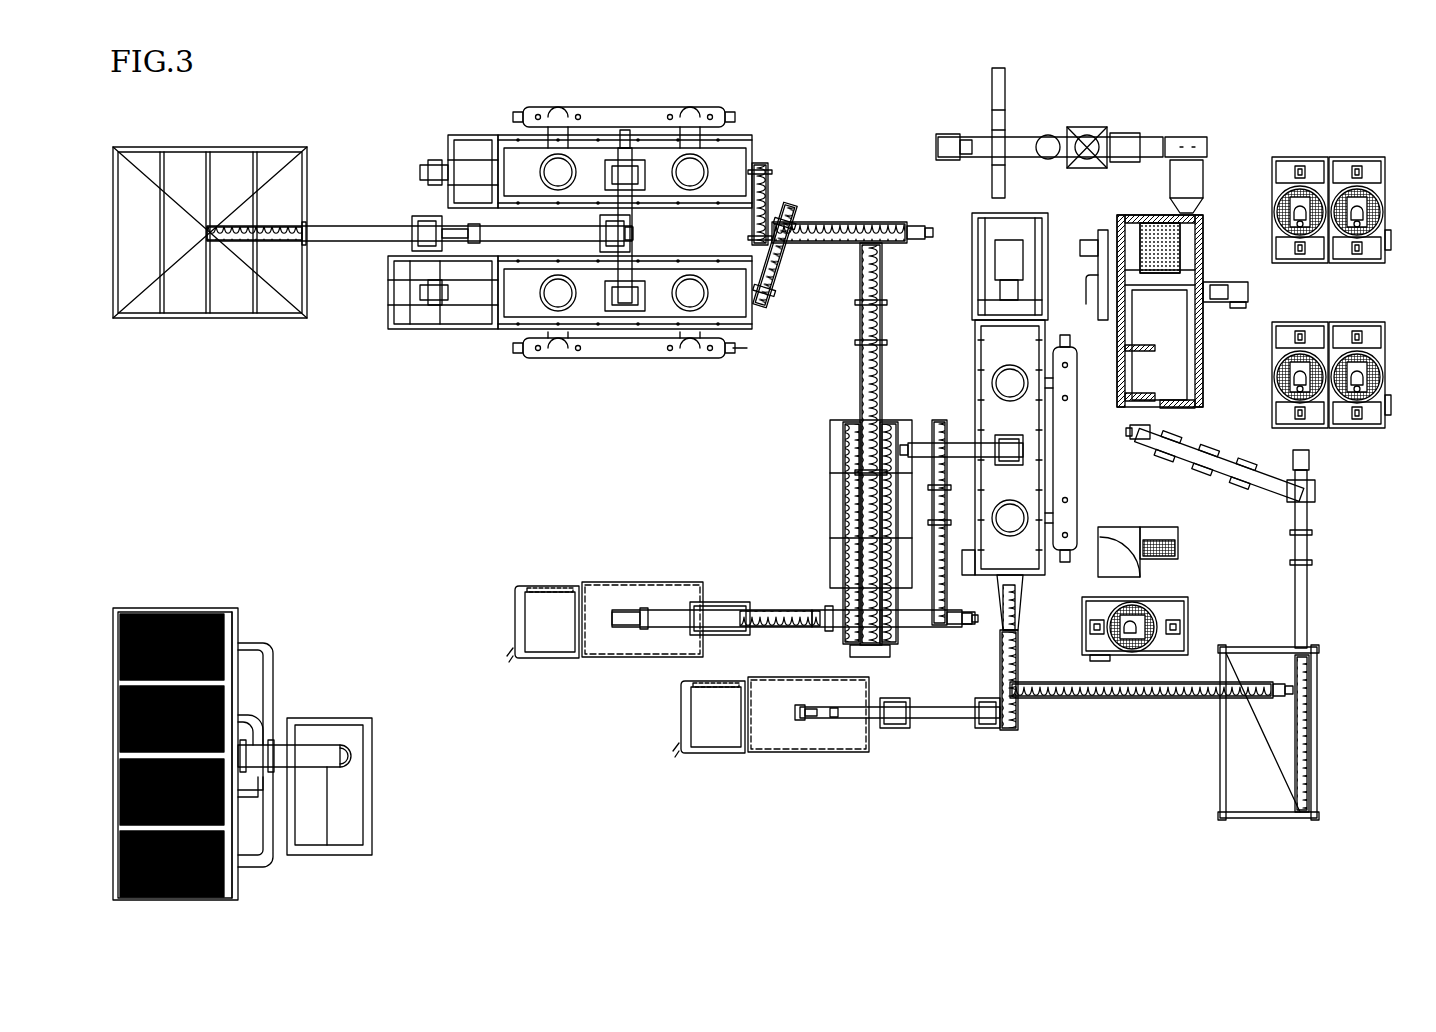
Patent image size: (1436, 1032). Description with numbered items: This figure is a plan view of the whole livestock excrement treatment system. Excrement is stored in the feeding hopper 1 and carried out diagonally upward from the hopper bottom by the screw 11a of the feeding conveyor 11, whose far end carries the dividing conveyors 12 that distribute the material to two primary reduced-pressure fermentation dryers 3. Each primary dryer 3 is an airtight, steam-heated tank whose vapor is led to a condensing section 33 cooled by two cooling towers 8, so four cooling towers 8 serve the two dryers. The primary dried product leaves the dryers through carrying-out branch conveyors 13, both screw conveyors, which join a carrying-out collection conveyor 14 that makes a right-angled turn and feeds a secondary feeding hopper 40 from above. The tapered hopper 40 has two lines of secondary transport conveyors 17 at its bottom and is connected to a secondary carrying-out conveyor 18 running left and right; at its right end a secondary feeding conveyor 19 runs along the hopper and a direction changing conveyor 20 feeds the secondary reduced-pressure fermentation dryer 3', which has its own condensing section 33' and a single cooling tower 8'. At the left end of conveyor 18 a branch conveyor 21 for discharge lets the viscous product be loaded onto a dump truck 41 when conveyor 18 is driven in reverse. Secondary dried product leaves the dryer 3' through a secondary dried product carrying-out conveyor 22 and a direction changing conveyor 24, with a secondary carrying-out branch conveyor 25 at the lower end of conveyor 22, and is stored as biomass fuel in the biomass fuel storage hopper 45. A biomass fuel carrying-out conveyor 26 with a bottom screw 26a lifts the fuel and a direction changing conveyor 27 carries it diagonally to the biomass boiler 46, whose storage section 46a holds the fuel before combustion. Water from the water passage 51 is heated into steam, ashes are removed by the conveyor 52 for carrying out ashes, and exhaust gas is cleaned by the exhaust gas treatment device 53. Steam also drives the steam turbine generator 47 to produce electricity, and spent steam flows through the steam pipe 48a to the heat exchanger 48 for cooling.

The feeding hopper 1 is at (232, 143).
The feeding conveyor 11 is at (344, 243).
The screw 11a is at (272, 226).
The primary reduced-pressure fermentation dryer 3 is at (599, 264).
The condensing section 33 is at (630, 240).
The dividing conveyor 12 is at (628, 180).
The carrying-out branch conveyor 13 is at (775, 205).
The carrying-out collection conveyor 14 is at (858, 325).
The exhaust gas treatment device 53 is at (1120, 127).
The biomass boiler 46 is at (1207, 352).
The storage section 46a is at (1140, 455).
The conveyor for carrying out ashes 52 is at (1230, 282).
The water passage 51 is at (1098, 312).
The cooling tower 8 is at (1331, 264).
The cooling tower 8' is at (1162, 627).
The secondary reduced-pressure fermentation dryer 3' is at (984, 394).
The condensing section 33' is at (1083, 448).
The secondary feeding hopper 40 is at (828, 425).
The secondary transport conveyor 17 is at (880, 510).
The secondary feeding conveyor 19 is at (940, 430).
The direction changing conveyor 20 is at (965, 445).
The direction changing conveyor for biomass fuel 27 is at (1237, 470).
The biomass fuel carrying-out conveyor 26 is at (1307, 580).
The screw 26a is at (1310, 710).
The biomass fuel storage hopper 45 is at (1222, 785).
The secondary dried product carrying-out conveyor 22 is at (1022, 617).
The direction changing conveyor 24 is at (1095, 700).
The dump truck 41 is at (605, 582).
The branch conveyor for discharge 21 is at (770, 612).
The secondary carrying-out conveyor 18 is at (920, 628).
The secondary carrying-out branch conveyor 25 is at (940, 715).
The heat exchanger 48 is at (183, 608).
The steam pipe 48a is at (305, 745).
The steam turbine generator 47 is at (375, 810).